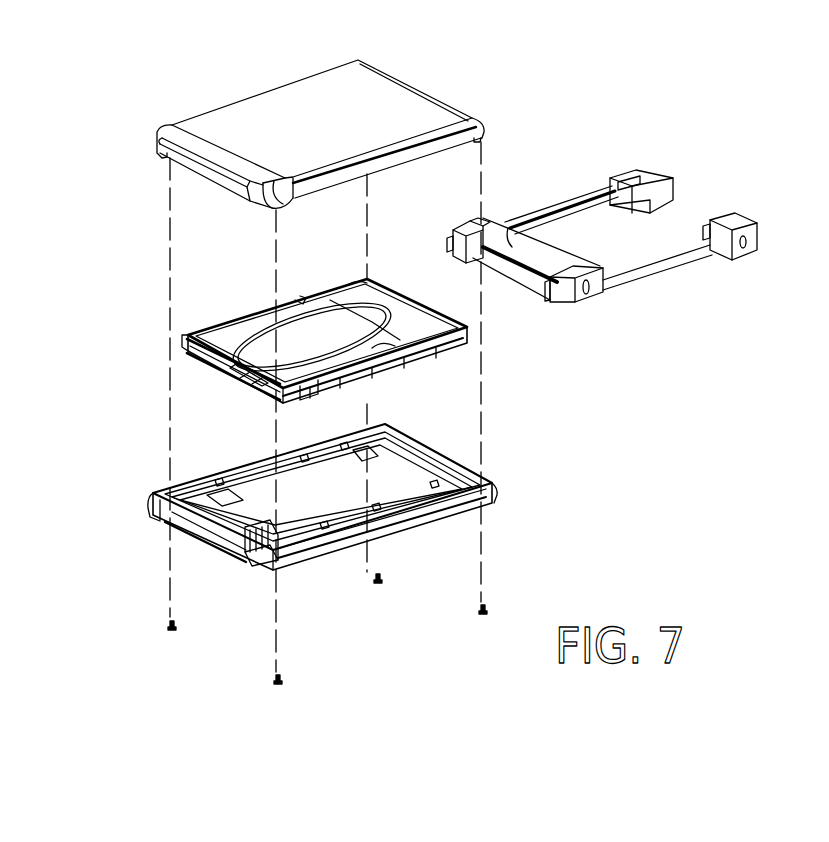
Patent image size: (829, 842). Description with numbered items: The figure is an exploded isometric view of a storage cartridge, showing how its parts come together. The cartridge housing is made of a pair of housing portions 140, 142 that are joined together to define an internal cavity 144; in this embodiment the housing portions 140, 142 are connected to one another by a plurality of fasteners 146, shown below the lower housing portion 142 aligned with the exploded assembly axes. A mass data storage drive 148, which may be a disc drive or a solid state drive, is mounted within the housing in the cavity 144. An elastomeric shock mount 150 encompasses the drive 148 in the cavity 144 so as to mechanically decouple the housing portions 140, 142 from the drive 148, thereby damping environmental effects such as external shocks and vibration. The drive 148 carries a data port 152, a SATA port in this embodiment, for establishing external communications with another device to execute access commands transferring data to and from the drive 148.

The housing portion 140 is at (265, 95).
The housing portion 142 is at (435, 520).
The internal cavity 144 is at (207, 453).
The fasteners 146 is at (483, 611).
The mass data storage drive 148 is at (410, 363).
The elastomeric shock mount 150 is at (567, 293).
The data port 152 is at (223, 365).